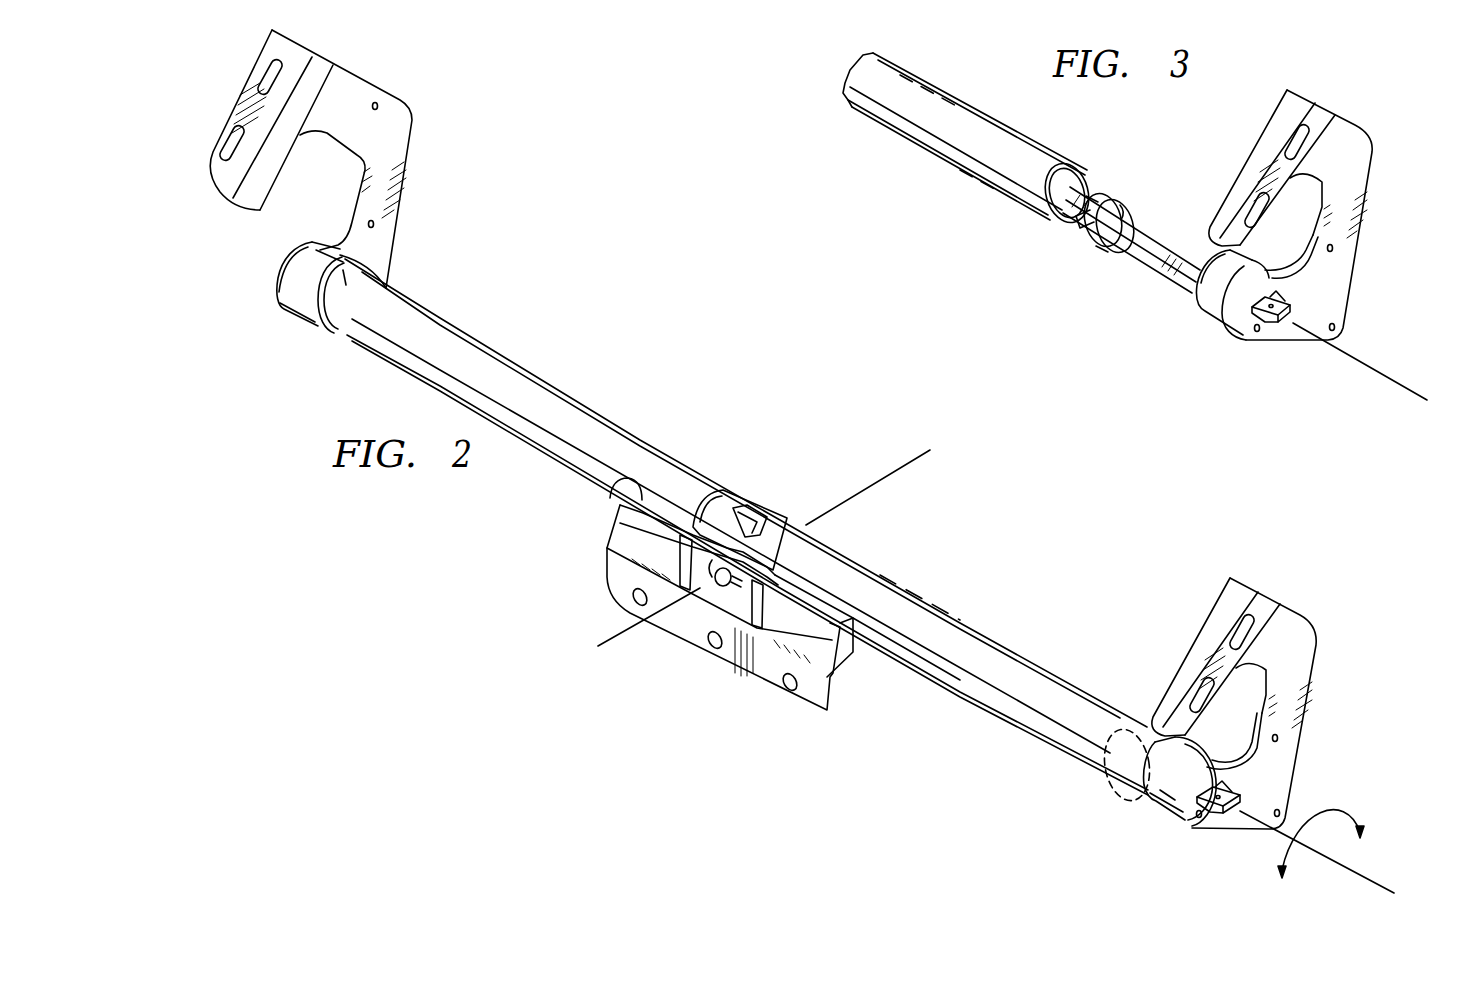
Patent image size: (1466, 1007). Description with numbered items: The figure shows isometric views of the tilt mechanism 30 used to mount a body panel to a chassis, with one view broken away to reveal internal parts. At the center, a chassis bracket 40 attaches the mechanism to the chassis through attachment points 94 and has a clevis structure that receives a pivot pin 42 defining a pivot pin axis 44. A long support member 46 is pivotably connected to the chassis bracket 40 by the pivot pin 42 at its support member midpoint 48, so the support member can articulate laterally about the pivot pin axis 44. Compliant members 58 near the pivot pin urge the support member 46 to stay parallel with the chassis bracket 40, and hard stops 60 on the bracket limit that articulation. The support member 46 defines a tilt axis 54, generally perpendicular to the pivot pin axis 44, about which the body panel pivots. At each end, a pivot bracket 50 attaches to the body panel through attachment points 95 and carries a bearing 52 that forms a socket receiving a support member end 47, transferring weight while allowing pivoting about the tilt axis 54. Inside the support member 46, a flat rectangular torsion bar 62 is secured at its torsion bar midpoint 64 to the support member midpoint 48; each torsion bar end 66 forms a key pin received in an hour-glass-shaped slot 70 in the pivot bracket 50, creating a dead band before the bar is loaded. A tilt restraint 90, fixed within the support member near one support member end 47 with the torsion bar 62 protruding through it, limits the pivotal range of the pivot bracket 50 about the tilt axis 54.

In FIG. 2, the tilt mechanism 30 is at (518, 550).
In FIG. 3, the tilt mechanism 30 is at (1405, 238).
In FIG. 2, the chassis bracket 40 is at (614, 567).
In FIG. 2, the pivot pin 42 is at (722, 584).
In FIG. 2, the pivot pin axis 44 is at (600, 652).
In FIG. 2, the support member 46 is at (990, 692).
In FIG. 3, the support member 46 is at (928, 137).
In FIG. 2, the support member end 47 is at (355, 268).
In FIG. 3, the support member end 47 is at (1043, 162).
In FIG. 2, the support member midpoint 48 is at (776, 538).
In FIG. 2, the pivot bracket 50 is at (400, 135).
In FIG. 3, the pivot bracket 50 is at (1366, 163).
In FIG. 2, the bearing 52 is at (300, 308).
In FIG. 3, the bearing 52 is at (1203, 302).
In FIG. 2, the tilt axis 54 is at (1383, 885).
In FIG. 3, the tilt axis 54 is at (1405, 385).
In FIG. 2, the compliant member 58 is at (617, 484).
In FIG. 2, the hard stop 60 is at (854, 650).
In FIG. 3, the torsion bar 62 is at (1152, 238).
In FIG. 2, the torsion bar midpoint 64 is at (750, 506).
In FIG. 2, the torsion bar end 66 is at (1232, 810).
In FIG. 3, the torsion bar end 66 is at (1328, 296).
In FIG. 2, the slot 70 is at (1218, 778).
In FIG. 3, the slot 70 is at (1222, 326).
In FIG. 2, the tilt restraint 90 is at (1115, 768).
In FIG. 3, the tilt restraint 90 is at (1113, 195).
In FIG. 2, the attachment points 94 is at (630, 609).
In FIG. 2, the attachment points 95 is at (268, 80).
In FIG. 3, the attachment points 95 is at (1292, 144).